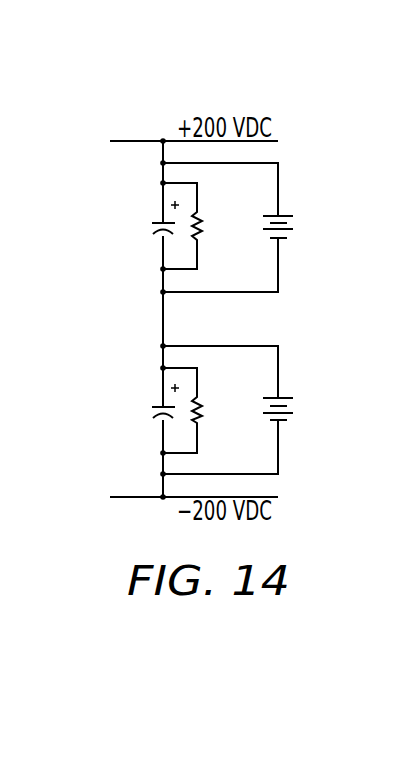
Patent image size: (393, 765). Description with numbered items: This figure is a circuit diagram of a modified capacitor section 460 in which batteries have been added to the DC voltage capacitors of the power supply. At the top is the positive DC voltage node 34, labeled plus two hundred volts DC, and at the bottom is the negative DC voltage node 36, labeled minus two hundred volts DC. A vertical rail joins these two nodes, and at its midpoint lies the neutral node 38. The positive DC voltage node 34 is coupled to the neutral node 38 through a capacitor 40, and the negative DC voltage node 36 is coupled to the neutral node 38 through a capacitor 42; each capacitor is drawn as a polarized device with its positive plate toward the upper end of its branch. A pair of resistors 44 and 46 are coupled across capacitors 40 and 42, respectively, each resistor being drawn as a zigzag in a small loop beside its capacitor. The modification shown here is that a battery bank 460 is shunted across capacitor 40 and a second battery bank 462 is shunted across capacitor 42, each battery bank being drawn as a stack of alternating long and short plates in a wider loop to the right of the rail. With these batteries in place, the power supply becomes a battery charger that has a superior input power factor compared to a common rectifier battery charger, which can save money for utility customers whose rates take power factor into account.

The positive DC voltage node 34 is at (137, 140).
The negative DC voltage node 36 is at (140, 499).
The neutral node 38 is at (165, 310).
The capacitor 40 is at (150, 226).
The capacitor 42 is at (150, 411).
The resistor 44 is at (200, 222).
The resistor 46 is at (202, 413).
The battery bank 460 is at (297, 228).
The battery bank 462 is at (297, 410).